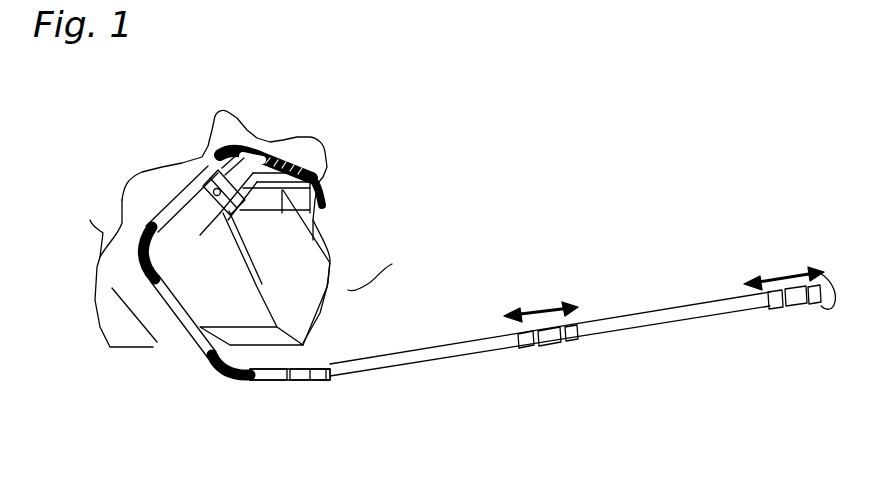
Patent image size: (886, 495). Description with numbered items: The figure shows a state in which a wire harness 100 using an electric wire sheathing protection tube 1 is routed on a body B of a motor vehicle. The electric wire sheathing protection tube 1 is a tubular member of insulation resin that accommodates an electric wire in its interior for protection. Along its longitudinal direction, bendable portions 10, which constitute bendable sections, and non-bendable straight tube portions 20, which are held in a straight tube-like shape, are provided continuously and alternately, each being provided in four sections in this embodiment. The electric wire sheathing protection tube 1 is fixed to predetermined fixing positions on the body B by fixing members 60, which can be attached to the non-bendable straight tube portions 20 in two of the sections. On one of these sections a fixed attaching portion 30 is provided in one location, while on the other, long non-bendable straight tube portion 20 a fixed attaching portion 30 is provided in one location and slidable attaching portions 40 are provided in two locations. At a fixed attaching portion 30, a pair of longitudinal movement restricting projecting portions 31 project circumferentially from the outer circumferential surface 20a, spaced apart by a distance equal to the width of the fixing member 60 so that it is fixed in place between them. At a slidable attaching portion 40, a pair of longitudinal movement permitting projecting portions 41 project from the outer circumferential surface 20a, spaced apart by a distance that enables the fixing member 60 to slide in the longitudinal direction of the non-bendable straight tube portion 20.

The electric wire sheathing protection tube 1 is at (639, 262).
The wire harness 100 is at (530, 224).
The body B is at (246, 228).
The bendable portion 10 is at (234, 136).
The non-bendable straight tube portion 20 is at (252, 147).
The outer circumferential surface 20a is at (420, 350).
The fixed attaching portion 30 is at (206, 152).
The longitudinal movement restricting projecting portion 31 is at (167, 196).
The slidable attaching portion 40 is at (573, 341).
The longitudinal movement permitting projecting portion 41 is at (521, 340).
The fixing member 60 is at (200, 208).